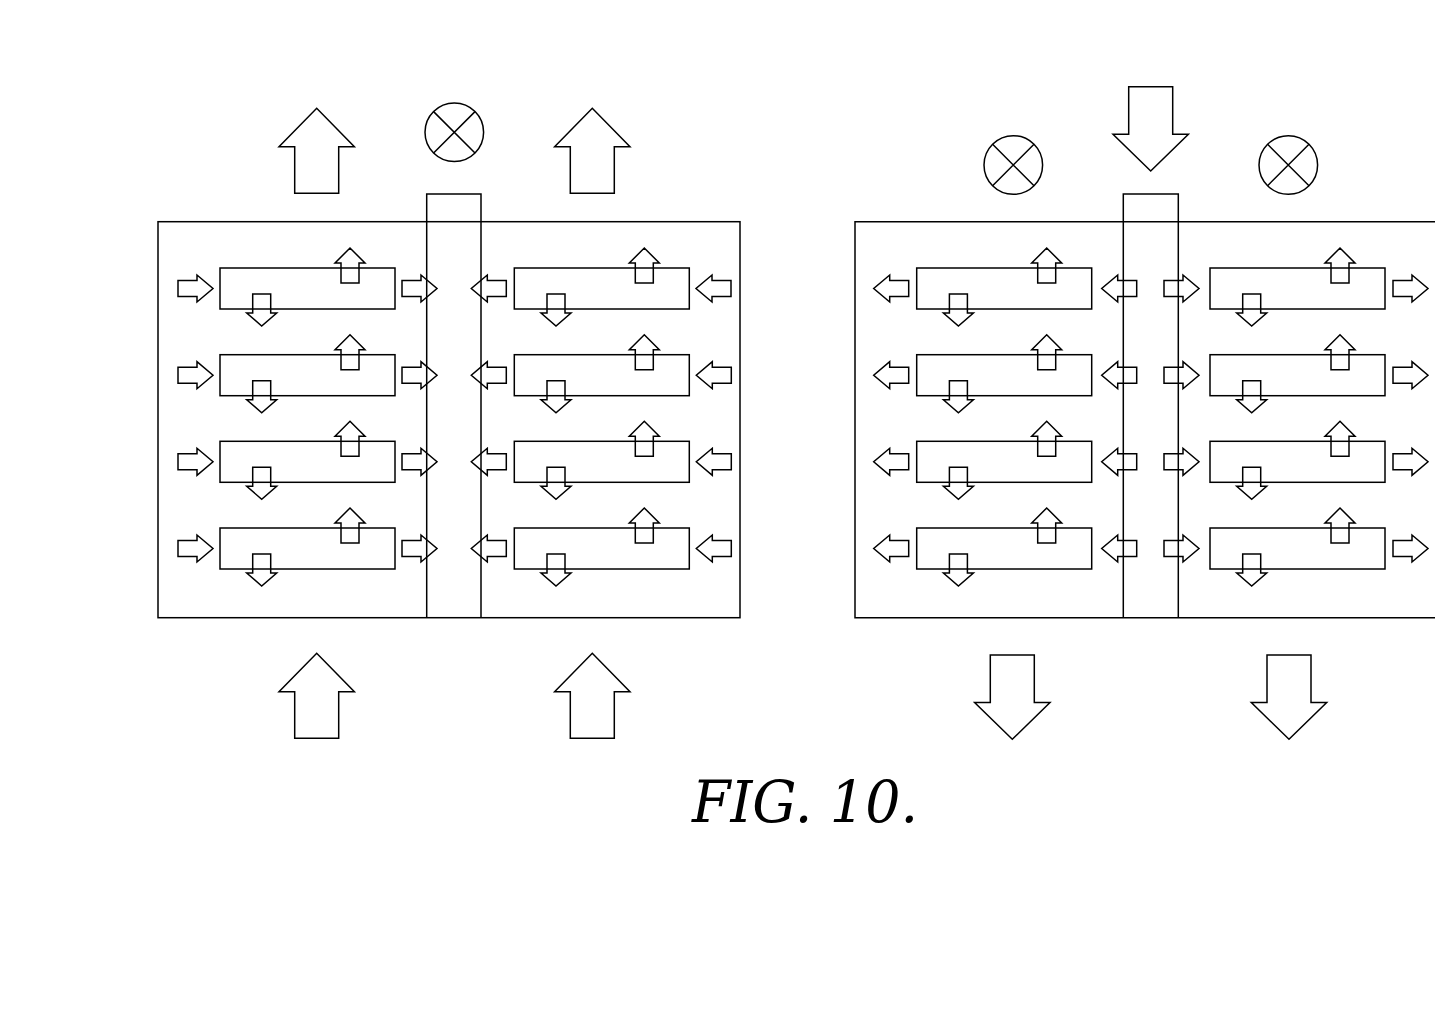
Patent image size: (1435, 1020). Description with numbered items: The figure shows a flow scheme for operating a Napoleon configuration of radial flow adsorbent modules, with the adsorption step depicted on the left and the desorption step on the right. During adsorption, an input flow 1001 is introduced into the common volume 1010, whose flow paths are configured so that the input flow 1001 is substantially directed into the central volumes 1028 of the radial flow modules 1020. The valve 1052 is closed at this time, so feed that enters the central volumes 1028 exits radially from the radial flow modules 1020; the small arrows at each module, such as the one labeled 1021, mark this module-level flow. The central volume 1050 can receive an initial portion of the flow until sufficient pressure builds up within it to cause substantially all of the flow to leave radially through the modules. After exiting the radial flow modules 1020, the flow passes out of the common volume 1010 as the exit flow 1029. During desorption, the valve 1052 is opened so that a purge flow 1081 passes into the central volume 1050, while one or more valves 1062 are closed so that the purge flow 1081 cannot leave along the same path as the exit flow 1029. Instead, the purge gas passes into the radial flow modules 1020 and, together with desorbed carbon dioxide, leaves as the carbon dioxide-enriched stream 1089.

The input flow 1001 is at (294, 730).
The common volume 1010 is at (158, 600).
The radial flow modules 1020 is at (687, 240).
The module airflow inlet 1021 is at (732, 288).
The central volumes 1028 is at (697, 563).
The exit flow 1029 is at (607, 122).
The central volume 1050 is at (452, 610).
The valve 1052 is at (457, 103).
The valves 1062 is at (1317, 157).
The purge flow 1081 is at (1193, 73).
The CO2-enriched stream 1089 is at (1028, 722).